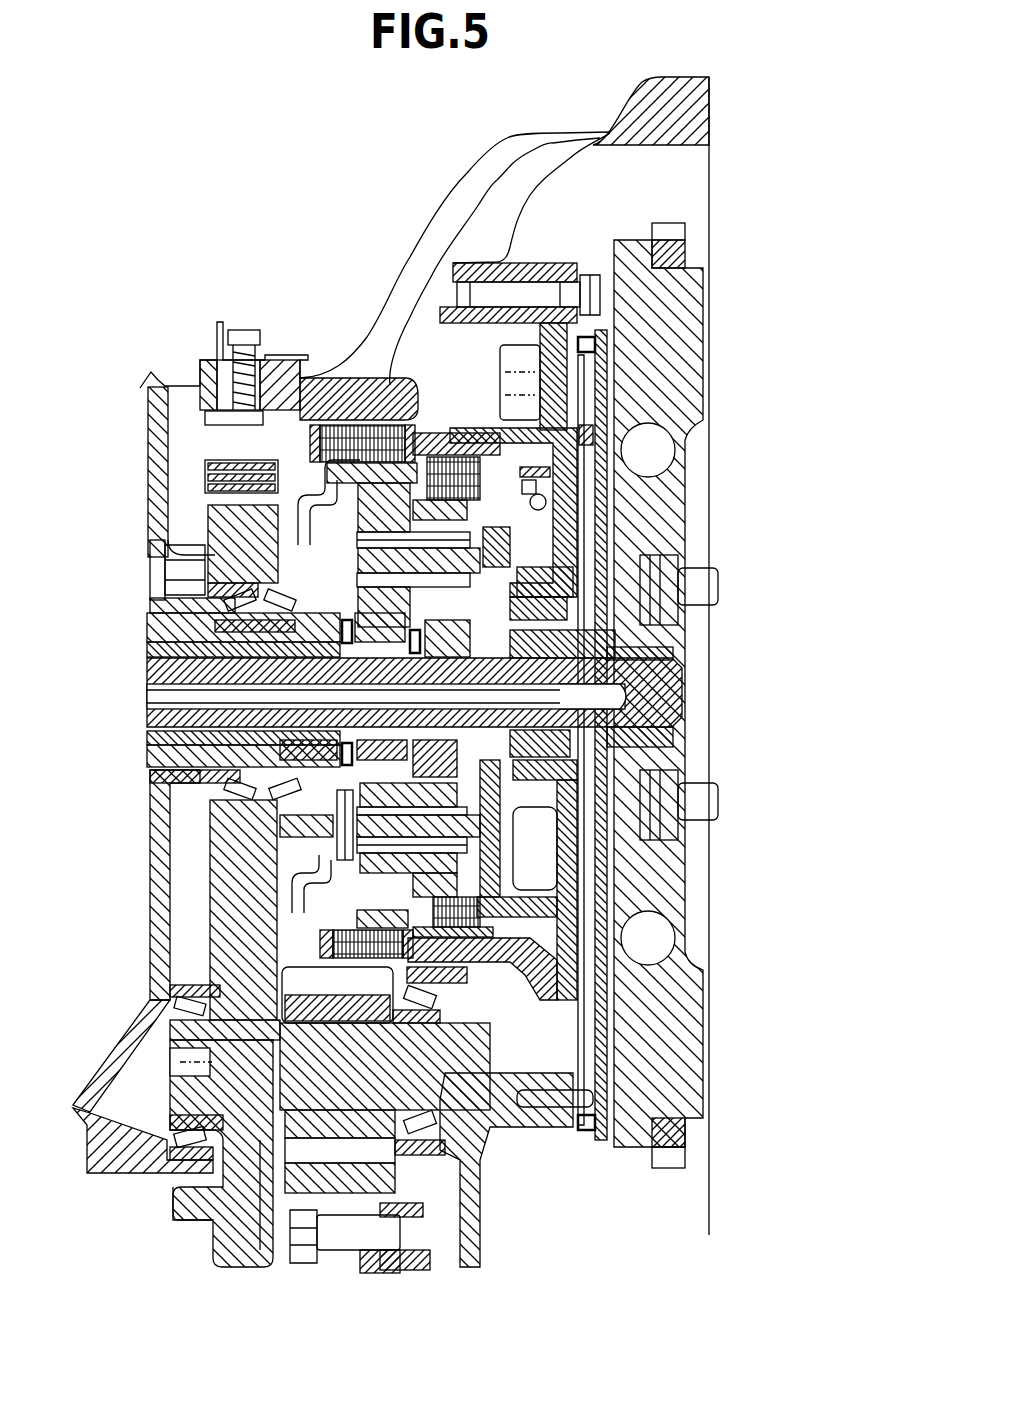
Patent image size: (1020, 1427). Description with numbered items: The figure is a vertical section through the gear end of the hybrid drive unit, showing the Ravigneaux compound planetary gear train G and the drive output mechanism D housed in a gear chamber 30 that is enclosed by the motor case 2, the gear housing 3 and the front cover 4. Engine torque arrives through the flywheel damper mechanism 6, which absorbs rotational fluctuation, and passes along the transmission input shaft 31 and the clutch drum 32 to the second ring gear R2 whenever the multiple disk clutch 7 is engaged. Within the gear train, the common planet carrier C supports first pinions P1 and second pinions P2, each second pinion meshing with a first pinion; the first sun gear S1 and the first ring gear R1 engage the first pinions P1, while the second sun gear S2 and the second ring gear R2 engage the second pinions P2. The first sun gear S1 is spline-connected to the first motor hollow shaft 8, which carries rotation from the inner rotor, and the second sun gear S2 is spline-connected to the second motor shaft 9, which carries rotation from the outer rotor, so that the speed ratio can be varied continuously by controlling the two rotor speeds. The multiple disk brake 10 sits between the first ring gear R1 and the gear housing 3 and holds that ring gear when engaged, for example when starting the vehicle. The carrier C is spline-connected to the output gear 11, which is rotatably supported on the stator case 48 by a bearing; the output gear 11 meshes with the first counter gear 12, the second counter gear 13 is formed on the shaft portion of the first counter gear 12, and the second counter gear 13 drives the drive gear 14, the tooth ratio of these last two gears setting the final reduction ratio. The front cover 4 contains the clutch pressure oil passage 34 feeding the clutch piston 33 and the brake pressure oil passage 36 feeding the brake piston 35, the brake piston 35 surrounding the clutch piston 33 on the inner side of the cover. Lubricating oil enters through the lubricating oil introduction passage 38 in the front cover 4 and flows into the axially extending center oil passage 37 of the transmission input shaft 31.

The motor case 2 is at (192, 386).
The gear housing 3 is at (493, 227).
The front cover 4 is at (607, 358).
The damper system 6 is at (680, 374).
The multiple disk clutch 7 is at (457, 443).
The first motor hollow shaft 8 is at (175, 650).
The second motor shaft 9 is at (165, 690).
The multiple disk brake 10 is at (373, 413).
The output gear 11 is at (273, 512).
The first counter gear 12 is at (230, 905).
The second counter gear 13 is at (316, 1003).
The drive gear 14 is at (385, 1205).
The gear chamber 30 is at (212, 437).
The transmission input shaft 31 is at (630, 700).
The clutch drum 32 is at (558, 515).
The clutch piston 33 is at (690, 590).
The clutch pressure oil passage 34 is at (480, 518).
The brake piston 35 is at (520, 363).
The brake pressure oil passage 36 is at (593, 432).
The center oil passage 37 is at (622, 698).
The lubricating oil introduction passage 38 is at (573, 800).
The stator case 48 is at (175, 628).
The common planet carrier C is at (273, 563).
The drive output mechanism D is at (168, 1207).
The Ravigneaux compound planetary gear train G is at (313, 488).
The first pinions P1 is at (360, 512).
The second pinions P2 is at (363, 877).
The first ring gear R1 is at (418, 458).
The second ring gear R2 is at (520, 540).
The first sun gear S1 is at (370, 642).
The second sun gear S2 is at (427, 640).